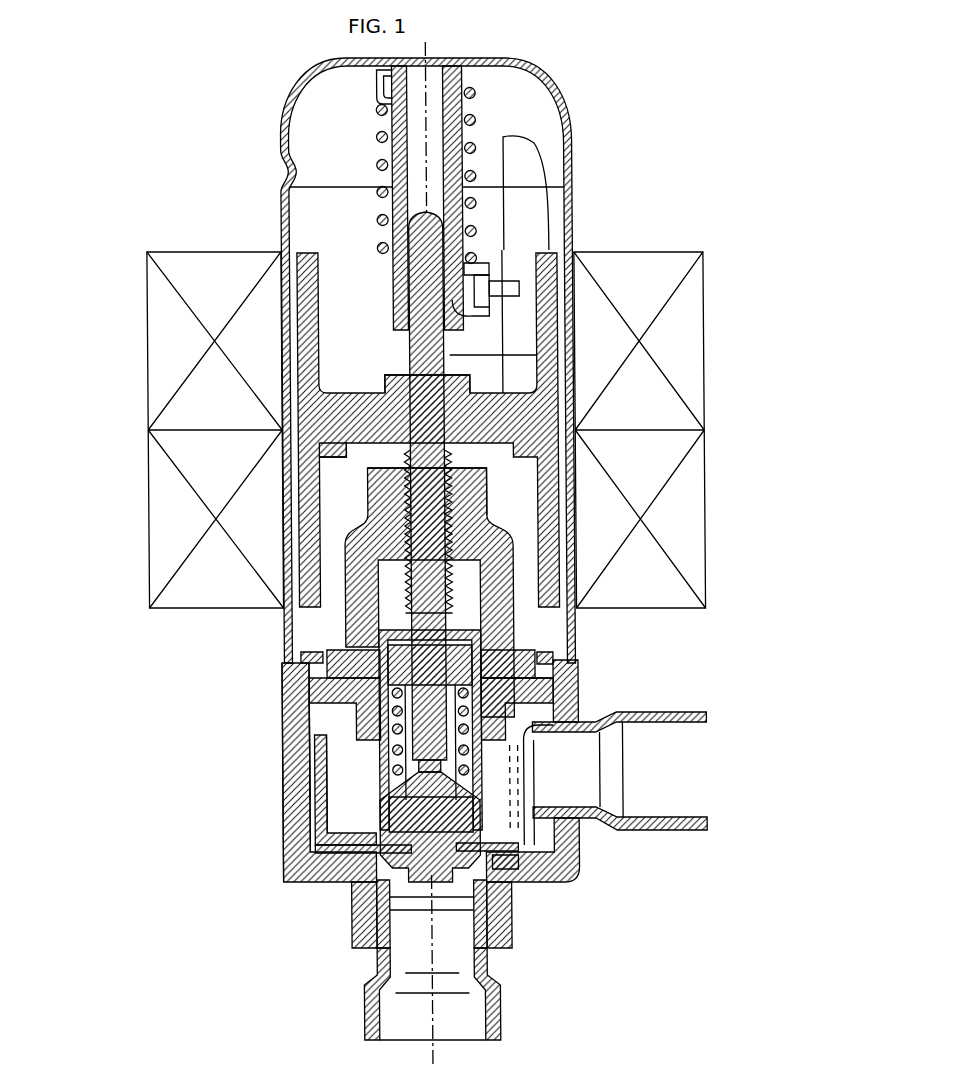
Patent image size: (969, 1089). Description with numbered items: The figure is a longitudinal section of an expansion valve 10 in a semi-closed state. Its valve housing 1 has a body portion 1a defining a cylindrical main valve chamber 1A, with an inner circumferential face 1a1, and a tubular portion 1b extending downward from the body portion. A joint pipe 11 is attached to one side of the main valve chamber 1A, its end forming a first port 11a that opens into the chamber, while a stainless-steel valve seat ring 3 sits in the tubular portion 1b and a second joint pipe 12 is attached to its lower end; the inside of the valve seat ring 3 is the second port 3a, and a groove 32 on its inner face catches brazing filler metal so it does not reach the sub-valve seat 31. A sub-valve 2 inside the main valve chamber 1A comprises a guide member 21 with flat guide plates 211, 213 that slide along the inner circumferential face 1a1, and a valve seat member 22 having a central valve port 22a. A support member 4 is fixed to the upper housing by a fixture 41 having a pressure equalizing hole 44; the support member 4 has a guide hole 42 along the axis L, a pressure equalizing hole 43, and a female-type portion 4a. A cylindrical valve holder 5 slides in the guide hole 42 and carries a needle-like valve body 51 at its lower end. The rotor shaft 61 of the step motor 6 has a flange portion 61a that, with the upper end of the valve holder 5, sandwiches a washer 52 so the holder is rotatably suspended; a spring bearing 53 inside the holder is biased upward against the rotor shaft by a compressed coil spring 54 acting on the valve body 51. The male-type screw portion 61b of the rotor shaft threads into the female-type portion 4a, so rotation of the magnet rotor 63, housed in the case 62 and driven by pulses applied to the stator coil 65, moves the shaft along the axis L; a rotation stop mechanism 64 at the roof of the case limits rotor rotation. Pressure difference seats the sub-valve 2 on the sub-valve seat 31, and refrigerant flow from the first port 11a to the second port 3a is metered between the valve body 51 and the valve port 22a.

The valve housing 1 is at (210, 763).
The main valve chamber 1A is at (302, 732).
The body portion 1a is at (290, 775).
The inner circumferential face 1a1 is at (302, 750).
The tubular portion 1b is at (346, 928).
The sub-valve 2 is at (533, 835).
The valve seat ring 3 is at (345, 903).
The second port 3a is at (395, 885).
The support member 4 is at (517, 632).
The female-type portion 4a is at (402, 512).
The valve holder 5 is at (552, 690).
The step motor 6 is at (712, 427).
The expansion valve 10 is at (652, 131).
The joint pipe 11 is at (693, 711).
The first port 11a is at (588, 812).
The joint pipe 12 is at (497, 1000).
The guide member 21 is at (309, 823).
The valve seat member 22 is at (345, 857).
The valve port 22a is at (378, 868).
The sub-valve seat 31 is at (512, 897).
The groove 32 is at (505, 940).
The fixture 41 is at (532, 655).
The guide hole 42 is at (470, 613).
The pressure equalizing hole 43 is at (503, 576).
The pressure equalizing hole 44 is at (537, 667).
The valve body 51 is at (522, 865).
The washer 52 is at (372, 634).
The spring bearing 53 is at (374, 688).
The compressed coil spring 54 is at (398, 718).
The rotor shaft 61 is at (447, 355).
The flange portion 61a is at (356, 650).
The male-type screw portion 61b is at (378, 538).
The case 62 is at (540, 395).
The magnet rotor 63 is at (306, 415).
The rotation stop mechanism 64 is at (350, 215).
The stator coil 65 is at (625, 272).
The guide plate 211 is at (321, 793).
The guide plate 213 is at (556, 703).
The axis L is at (425, 90).